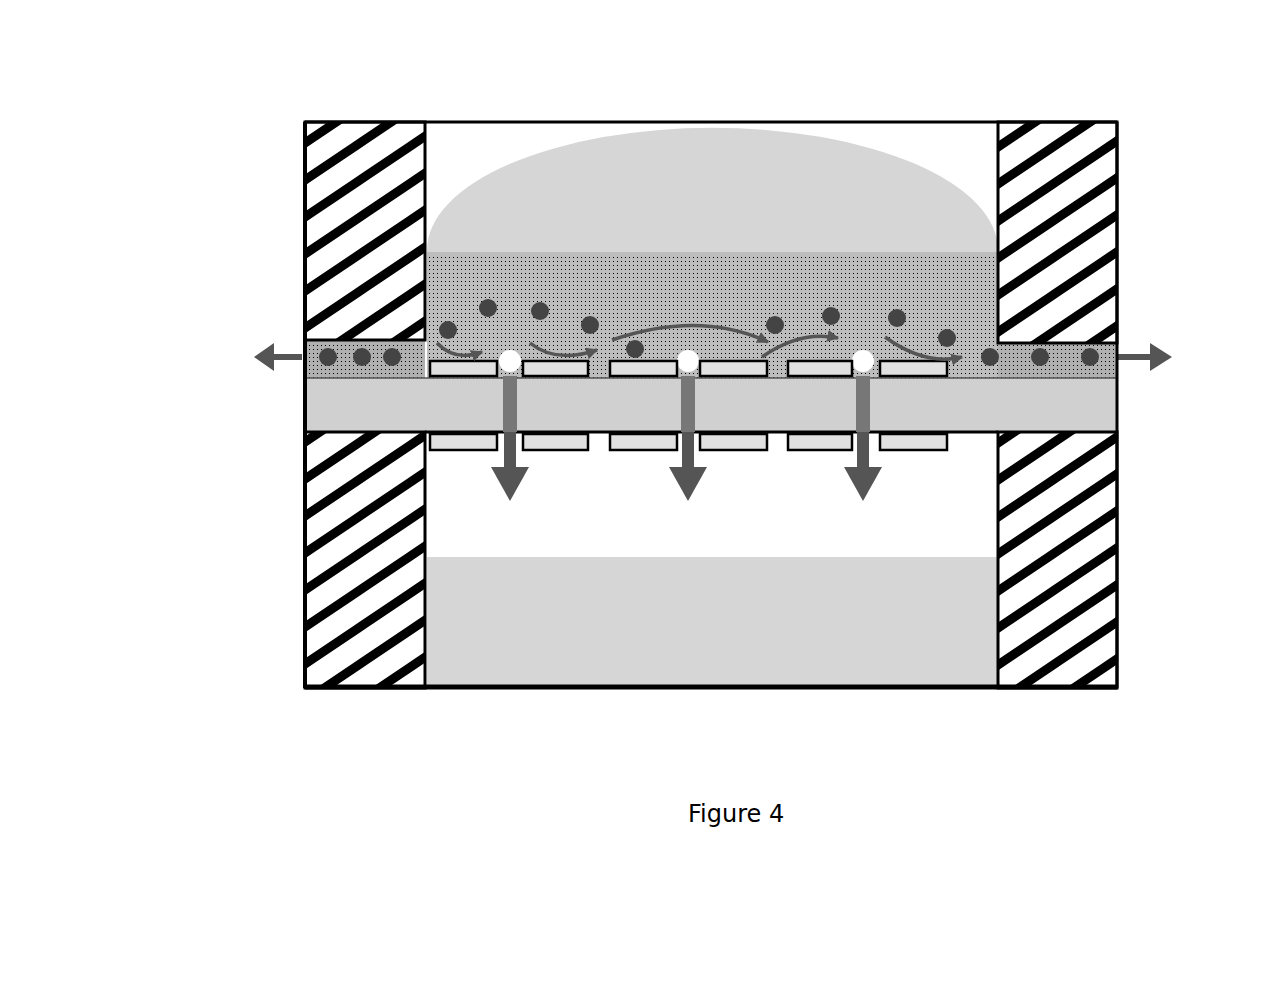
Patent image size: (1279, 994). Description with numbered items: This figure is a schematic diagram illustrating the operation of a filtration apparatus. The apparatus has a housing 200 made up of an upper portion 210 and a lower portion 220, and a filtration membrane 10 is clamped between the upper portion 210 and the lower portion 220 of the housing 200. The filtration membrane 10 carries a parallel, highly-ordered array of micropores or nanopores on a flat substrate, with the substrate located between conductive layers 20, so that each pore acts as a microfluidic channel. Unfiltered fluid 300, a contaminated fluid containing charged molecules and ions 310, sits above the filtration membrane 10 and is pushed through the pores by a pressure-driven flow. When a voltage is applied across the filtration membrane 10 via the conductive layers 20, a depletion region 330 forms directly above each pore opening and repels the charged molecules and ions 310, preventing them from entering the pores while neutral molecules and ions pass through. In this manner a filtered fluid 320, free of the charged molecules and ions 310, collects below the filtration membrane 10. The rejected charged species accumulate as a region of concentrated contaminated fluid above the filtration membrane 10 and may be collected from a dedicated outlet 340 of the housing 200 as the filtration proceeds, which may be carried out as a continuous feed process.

The filtration membrane 10 is at (1124, 407).
The conductive layers 20 is at (435, 380).
The housing 200 is at (933, 737).
The upper portion 210 is at (1127, 146).
The lower portion 220 is at (1127, 652).
The unfiltered fluid 300 is at (716, 176).
The charged molecules and ions 310 is at (484, 305).
The filtered fluid 320 is at (650, 635).
The depletion region 330 is at (872, 355).
The outlet for concentrated contaminated fluid 340 is at (326, 361).